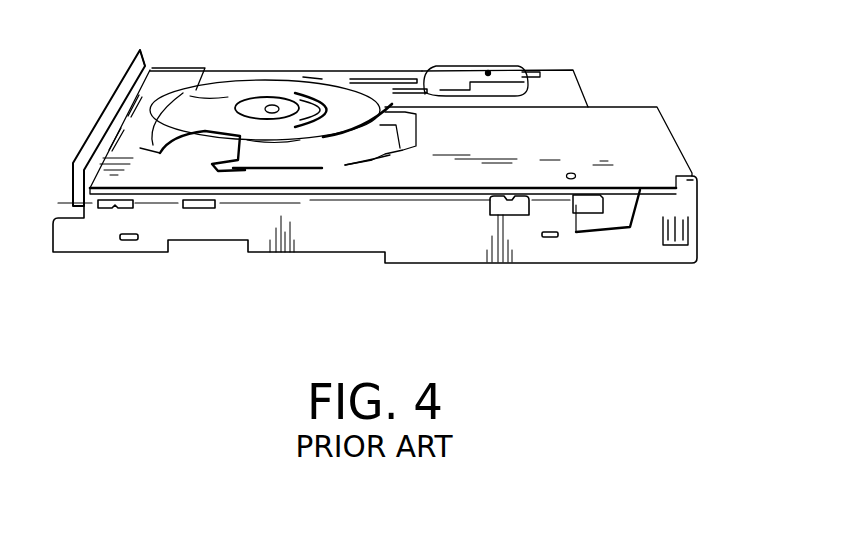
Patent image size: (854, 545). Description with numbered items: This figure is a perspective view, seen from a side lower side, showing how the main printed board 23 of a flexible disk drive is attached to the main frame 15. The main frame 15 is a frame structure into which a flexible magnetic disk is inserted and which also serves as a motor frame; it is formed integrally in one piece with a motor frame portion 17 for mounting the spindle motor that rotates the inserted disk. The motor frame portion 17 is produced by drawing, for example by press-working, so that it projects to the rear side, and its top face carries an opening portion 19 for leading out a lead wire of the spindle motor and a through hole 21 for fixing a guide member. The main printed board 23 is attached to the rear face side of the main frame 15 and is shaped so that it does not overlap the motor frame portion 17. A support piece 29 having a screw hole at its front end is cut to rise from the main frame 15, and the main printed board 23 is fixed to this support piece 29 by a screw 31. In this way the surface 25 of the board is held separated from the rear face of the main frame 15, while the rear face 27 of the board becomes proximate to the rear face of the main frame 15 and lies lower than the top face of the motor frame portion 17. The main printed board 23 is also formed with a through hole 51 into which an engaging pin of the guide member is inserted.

The main frame 15 is at (690, 230).
The motor frame portion 17 is at (342, 134).
The opening portion 19 is at (333, 120).
The through hole 21 is at (361, 116).
The main printed board 23 is at (660, 148).
The surface 25 is at (456, 190).
The rear face 27 is at (618, 117).
The support piece 29 is at (581, 194).
The screw 31 is at (572, 172).
The through hole 51 is at (417, 148).